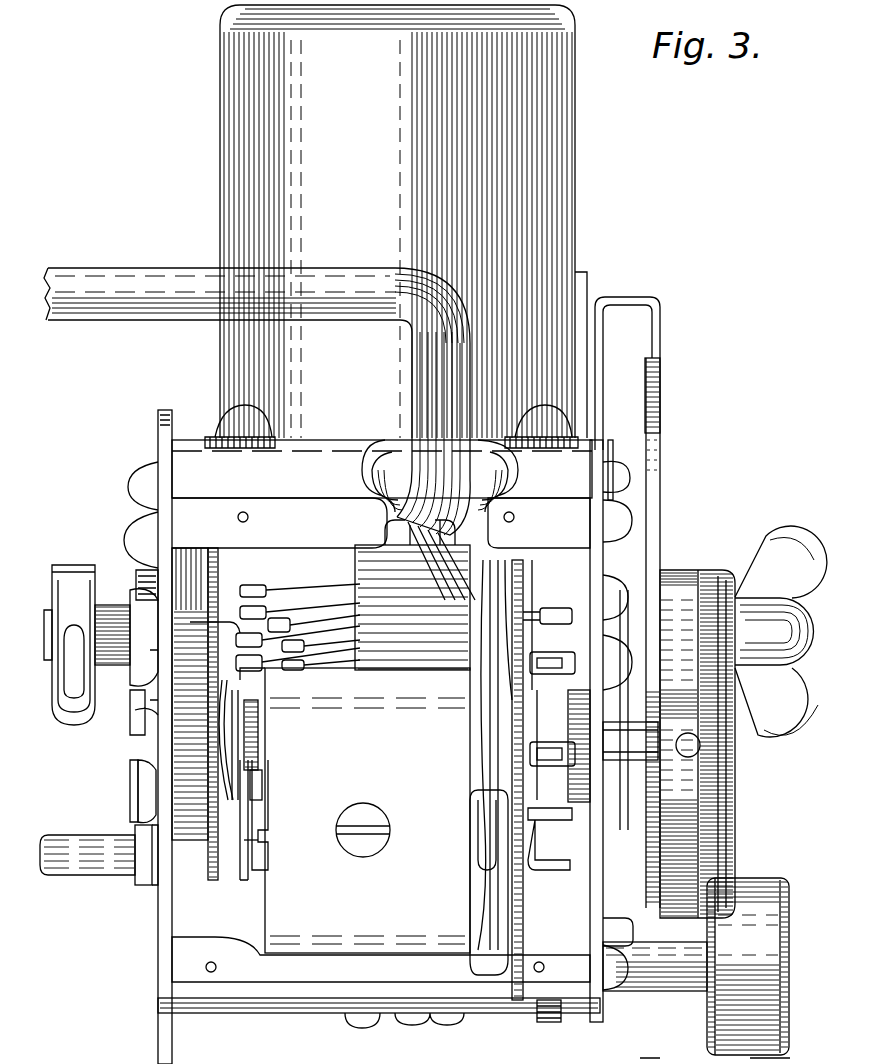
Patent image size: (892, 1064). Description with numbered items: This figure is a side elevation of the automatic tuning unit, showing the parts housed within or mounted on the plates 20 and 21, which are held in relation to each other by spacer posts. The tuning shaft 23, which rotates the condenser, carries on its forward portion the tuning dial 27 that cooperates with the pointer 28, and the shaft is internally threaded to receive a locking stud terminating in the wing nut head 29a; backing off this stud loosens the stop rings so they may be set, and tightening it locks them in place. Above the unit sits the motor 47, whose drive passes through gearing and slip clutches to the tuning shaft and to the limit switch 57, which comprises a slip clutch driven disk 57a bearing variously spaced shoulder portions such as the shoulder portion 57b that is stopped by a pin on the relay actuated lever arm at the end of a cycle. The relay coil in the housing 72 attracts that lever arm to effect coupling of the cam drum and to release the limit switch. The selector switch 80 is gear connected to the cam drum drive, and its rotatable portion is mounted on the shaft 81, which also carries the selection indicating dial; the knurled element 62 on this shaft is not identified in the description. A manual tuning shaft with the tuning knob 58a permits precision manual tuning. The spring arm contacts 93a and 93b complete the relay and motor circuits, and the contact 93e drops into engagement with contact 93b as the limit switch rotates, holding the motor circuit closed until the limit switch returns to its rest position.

The motor 47 is at (230, 146).
The pointer 28 is at (660, 333).
The tuning dial 27 is at (660, 427).
The wing nut head 29a is at (779, 530).
The tuning shaft 23 is at (108, 604).
The contact 93e is at (240, 640).
The spring arm contact 93b is at (270, 660).
The spring arm contact 93a is at (304, 645).
The shaft 81 is at (640, 755).
The knob 62 is at (735, 828).
The tuning knob 58a is at (771, 878).
The shoulder portion 57b is at (248, 866).
The limit switch disk 57a is at (244, 880).
The limit switch 57 is at (204, 858).
The relay coil housing 72 is at (285, 926).
The selector switch 80 is at (544, 882).
The plate 20 is at (158, 1016).
The plate 21 is at (603, 1010).